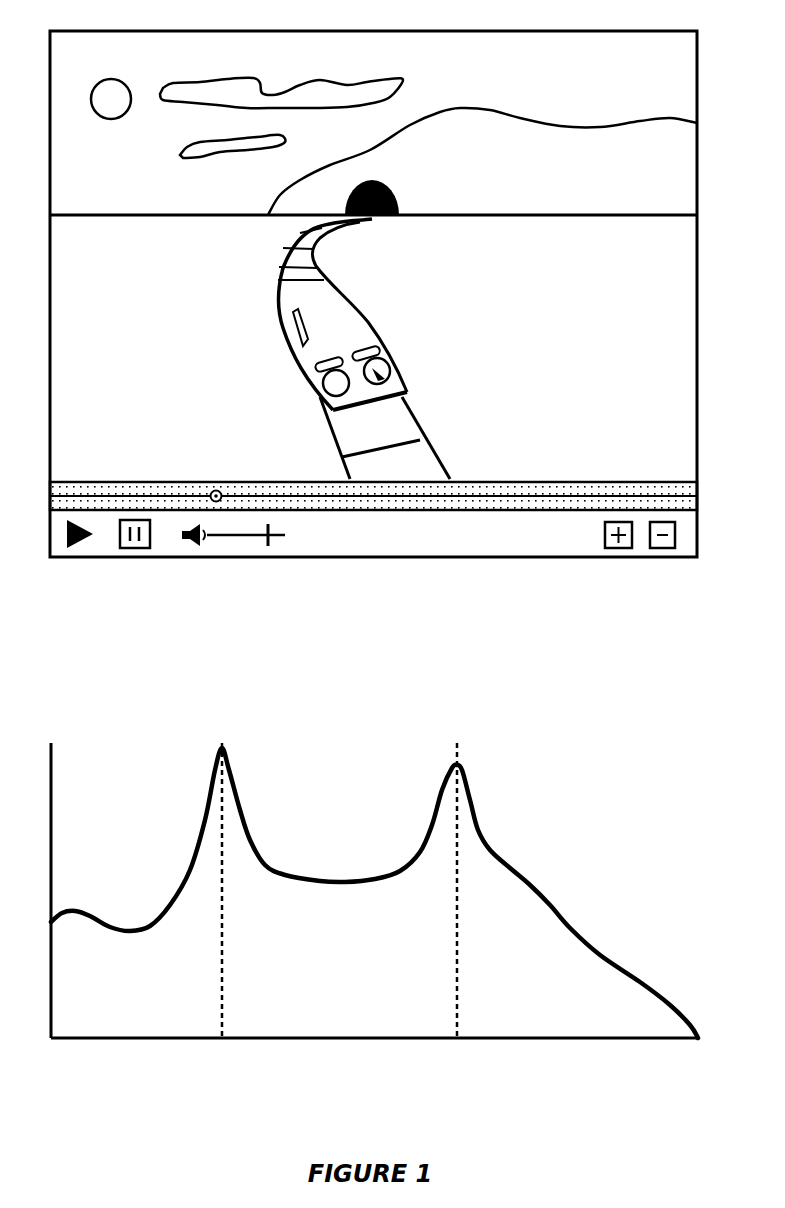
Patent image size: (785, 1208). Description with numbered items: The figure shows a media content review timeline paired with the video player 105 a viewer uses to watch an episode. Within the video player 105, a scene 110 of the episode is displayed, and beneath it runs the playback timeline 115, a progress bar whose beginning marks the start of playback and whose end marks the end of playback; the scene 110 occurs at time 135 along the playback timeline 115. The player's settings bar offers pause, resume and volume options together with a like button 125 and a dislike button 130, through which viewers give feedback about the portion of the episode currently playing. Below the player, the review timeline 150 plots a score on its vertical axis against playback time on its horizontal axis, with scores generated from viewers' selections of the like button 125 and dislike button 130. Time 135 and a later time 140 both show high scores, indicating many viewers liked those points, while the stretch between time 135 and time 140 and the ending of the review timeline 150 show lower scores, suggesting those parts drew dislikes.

The scene 110 is at (583, 31).
The video player 105 is at (714, 228).
The playback timeline 115 is at (697, 482).
The like button 125 is at (618, 548).
The dislike button 130 is at (665, 548).
The time 135 is at (216, 491).
The time 140 is at (457, 1038).
The review timeline 150 is at (588, 808).